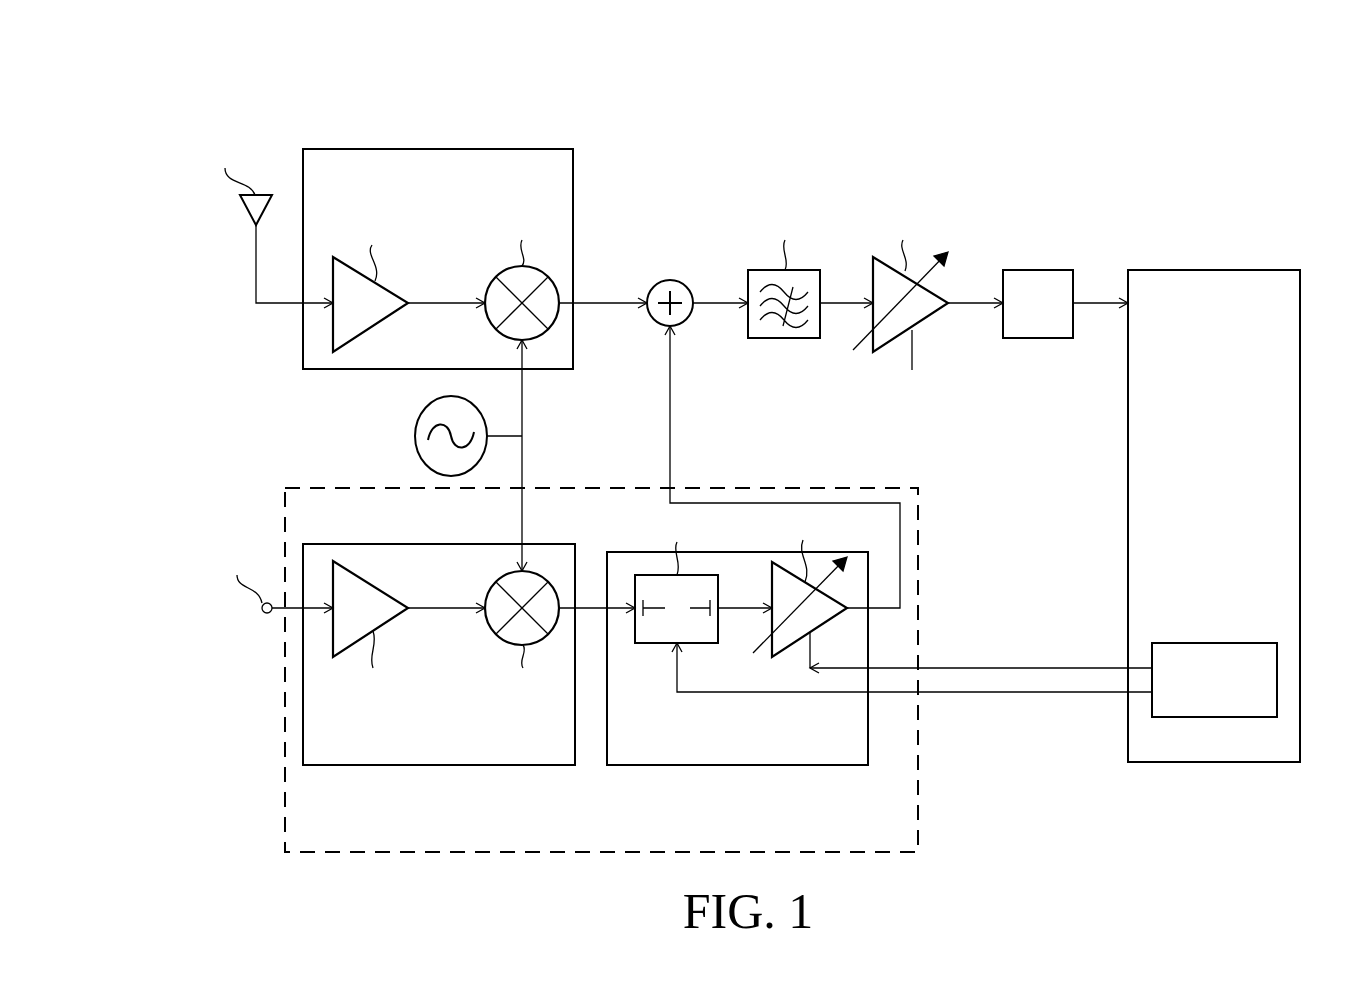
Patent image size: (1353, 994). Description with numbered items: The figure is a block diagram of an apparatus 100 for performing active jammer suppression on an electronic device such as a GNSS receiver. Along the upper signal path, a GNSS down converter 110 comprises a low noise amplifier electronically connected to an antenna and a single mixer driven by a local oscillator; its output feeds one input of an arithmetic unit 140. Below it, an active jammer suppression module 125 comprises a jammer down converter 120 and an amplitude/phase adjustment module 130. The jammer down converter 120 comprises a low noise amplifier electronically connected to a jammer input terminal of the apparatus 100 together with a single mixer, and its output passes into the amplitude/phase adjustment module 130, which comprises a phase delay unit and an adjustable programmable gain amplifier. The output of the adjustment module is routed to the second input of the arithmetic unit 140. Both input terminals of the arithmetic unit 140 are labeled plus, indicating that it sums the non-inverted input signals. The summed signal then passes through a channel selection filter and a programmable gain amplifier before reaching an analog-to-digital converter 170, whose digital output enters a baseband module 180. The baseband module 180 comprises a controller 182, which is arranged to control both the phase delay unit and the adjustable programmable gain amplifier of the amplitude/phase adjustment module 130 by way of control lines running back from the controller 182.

The apparatus 100 is at (1090, 112).
The GNSS down converter 110 is at (440, 149).
The jammer down converter 120 is at (400, 765).
The active jammer suppression module 125 is at (818, 488).
The amplitude/phase adjustment module 130 is at (810, 765).
The arithmetic unit 140 is at (672, 280).
The analog-to-digital converter 170 is at (1040, 270).
The baseband module 180 is at (1217, 270).
The controller 182 is at (1215, 643).